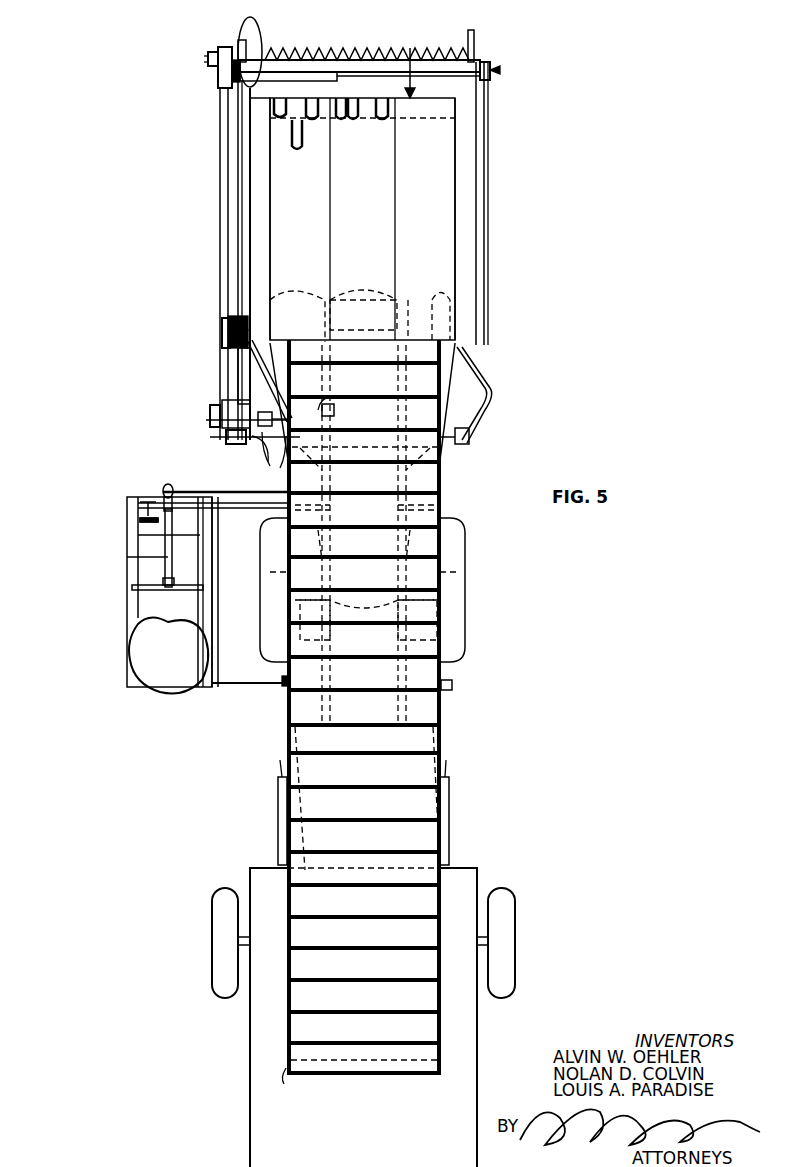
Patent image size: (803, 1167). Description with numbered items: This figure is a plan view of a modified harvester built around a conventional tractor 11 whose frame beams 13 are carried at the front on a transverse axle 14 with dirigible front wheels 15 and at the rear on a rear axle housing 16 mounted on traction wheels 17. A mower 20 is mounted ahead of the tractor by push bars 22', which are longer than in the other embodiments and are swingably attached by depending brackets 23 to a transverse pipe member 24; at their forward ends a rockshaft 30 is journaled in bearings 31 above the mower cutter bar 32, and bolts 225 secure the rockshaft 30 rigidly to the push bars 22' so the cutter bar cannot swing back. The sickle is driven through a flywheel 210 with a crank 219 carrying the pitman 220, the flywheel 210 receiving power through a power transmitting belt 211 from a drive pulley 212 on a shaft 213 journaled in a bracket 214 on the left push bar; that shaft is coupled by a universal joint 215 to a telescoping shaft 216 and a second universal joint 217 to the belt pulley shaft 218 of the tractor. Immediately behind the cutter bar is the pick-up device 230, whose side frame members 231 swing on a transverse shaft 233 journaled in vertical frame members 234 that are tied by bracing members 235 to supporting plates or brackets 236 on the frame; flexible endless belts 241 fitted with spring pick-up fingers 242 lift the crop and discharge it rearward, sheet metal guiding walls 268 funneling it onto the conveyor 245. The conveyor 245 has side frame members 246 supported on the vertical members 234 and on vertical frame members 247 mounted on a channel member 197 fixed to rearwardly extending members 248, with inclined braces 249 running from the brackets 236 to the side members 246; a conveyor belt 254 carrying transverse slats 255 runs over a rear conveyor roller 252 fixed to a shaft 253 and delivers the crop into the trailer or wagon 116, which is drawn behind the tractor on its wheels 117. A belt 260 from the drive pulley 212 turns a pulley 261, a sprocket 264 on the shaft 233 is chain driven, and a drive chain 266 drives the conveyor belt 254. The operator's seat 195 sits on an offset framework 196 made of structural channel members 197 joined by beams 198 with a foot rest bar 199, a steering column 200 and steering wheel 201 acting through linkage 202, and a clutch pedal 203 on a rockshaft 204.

The tractor 11 is at (352, 292).
The frame beams 13 is at (398, 574).
The transverse axle 14 is at (410, 330).
The dirigible front wheels 15 is at (432, 296).
The rear axle housing 16 is at (368, 623).
The traction wheels 17 is at (460, 544).
The mower 20 is at (500, 70).
The push bars 22' is at (352, 251).
The depending brackets 23 is at (228, 444).
The transverse pipe member 24 is at (253, 452).
The rockshaft 30 is at (288, 62).
The bearings 31 is at (246, 56).
The mower cutter bar 32 is at (335, 77).
The trailer or wagon 116 is at (456, 884).
The wheel 117 is at (218, 900).
The operator's seat 195 is at (160, 686).
The framework 196 is at (124, 684).
The structural channel members 197 is at (218, 505).
The beams 198 is at (128, 527).
The foot rest bar 199 is at (194, 536).
The steering column 200 is at (127, 557).
The steering wheel 201 is at (142, 590).
The linkage 202 is at (172, 486).
The clutch pedal 203 is at (142, 520).
The rockshaft 204 is at (200, 502).
The flywheel 210 is at (218, 70).
The power transmitting belt 211 is at (220, 232).
The drive pulley 212 is at (224, 402).
The shaft 213 is at (216, 422).
The bracket 214 is at (210, 410).
The universal joint 215 is at (269, 460).
The telescoping shaft 216 is at (340, 440).
The universal joint 217 is at (326, 400).
The belt pulley shaft 218 is at (336, 408).
The crank 219 is at (238, 48).
The pitman 220 is at (208, 56).
The bolts 225 is at (234, 82).
The pick-up device 230 is at (414, 63).
The side frame members 231 is at (258, 218).
The transverse shaft 233 is at (278, 296).
The vertical frame members 234 is at (356, 330).
The bracing members 235 is at (400, 476).
The supporting plates or brackets 236 is at (364, 545).
The flexible endless belts 241 is at (404, 182).
The spring pick-up fingers 242 is at (306, 136).
The conveyor 245 is at (285, 838).
The frame members 246 is at (290, 974).
The vertical frame members 247 is at (284, 676).
The rearwardly extending members 248 is at (362, 692).
The inclined braces 249 is at (270, 572).
The rear conveyor roller 252 is at (350, 1058).
The shaft 253 is at (356, 1085).
The conveyor belt 254 is at (430, 772).
The transverse slats 255 is at (352, 760).
The belt 260 is at (238, 364).
The pulley 261 is at (228, 318).
The sprocket 264 is at (228, 336).
The drive chain 266 is at (248, 318).
The sheet metal guiding walls 268 is at (268, 342).